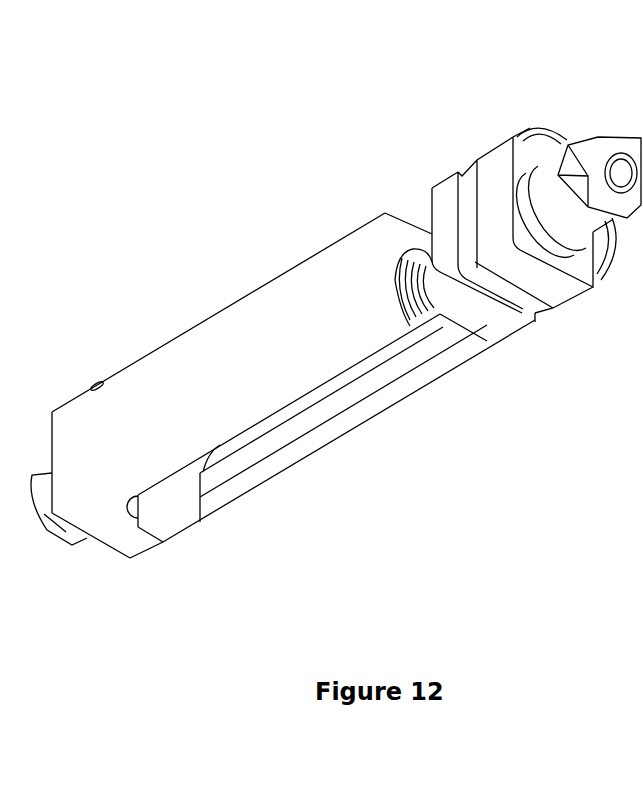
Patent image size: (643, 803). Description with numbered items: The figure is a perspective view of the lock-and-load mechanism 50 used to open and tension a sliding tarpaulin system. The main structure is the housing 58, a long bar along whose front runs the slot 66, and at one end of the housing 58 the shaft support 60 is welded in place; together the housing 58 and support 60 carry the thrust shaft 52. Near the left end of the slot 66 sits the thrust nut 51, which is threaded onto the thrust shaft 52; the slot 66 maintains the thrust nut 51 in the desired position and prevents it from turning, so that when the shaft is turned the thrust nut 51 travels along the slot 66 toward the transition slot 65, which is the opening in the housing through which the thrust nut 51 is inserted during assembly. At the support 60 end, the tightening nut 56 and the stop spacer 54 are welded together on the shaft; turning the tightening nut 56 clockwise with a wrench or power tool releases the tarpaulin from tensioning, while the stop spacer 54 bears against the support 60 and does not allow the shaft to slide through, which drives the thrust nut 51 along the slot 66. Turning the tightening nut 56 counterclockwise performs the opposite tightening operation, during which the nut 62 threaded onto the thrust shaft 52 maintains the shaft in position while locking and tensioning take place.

The clamp assembly 50 is at (290, 490).
The thrust nut 51 is at (167, 524).
The thrust shaft 52 is at (423, 303).
The stop spacer 54 is at (527, 192).
The tightening nut 56 is at (580, 157).
The housing 58 is at (212, 372).
The shaft support 60 is at (537, 284).
The nut 62 is at (42, 493).
The transition slot 65 is at (408, 198).
The slot 66 is at (290, 418).